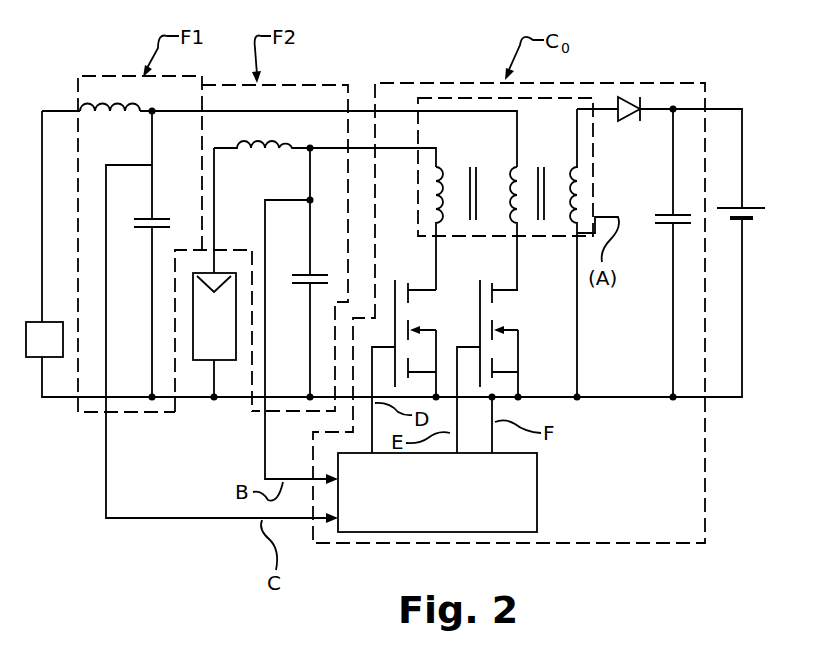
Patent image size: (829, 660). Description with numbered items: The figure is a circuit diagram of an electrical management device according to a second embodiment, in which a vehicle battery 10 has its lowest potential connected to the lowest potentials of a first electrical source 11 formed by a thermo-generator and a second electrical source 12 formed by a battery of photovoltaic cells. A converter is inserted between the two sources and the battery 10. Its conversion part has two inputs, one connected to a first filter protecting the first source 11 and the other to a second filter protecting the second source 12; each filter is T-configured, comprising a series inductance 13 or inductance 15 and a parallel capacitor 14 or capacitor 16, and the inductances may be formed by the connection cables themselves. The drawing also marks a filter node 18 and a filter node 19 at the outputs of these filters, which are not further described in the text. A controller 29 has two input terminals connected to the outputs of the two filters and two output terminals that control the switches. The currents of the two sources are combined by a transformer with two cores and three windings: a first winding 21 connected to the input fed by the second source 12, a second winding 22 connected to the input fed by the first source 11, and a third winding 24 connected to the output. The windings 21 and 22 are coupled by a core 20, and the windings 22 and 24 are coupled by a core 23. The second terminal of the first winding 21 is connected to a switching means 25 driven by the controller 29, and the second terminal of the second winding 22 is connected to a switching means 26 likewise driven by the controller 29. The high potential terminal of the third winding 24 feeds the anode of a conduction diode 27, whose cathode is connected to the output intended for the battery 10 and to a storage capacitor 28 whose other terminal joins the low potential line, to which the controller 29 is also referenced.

The vehicle battery 10 is at (752, 207).
The first electrical source 11 is at (35, 322).
The second electrical source 12 is at (222, 352).
The inductance 13 is at (103, 97).
The capacitor 14 is at (162, 217).
The inductance 15 is at (285, 130).
The capacitor 16 is at (318, 272).
The node 18 is at (148, 160).
The node 19 is at (308, 197).
The core 20 is at (490, 185).
The first winding 21 is at (440, 160).
The second winding 22 is at (507, 226).
The core 23 is at (527, 195).
The third winding 24 is at (567, 160).
The switching means 25 is at (430, 302).
The switching means 26 is at (548, 356).
The conduction diode 27 is at (628, 98).
The storage capacitor 28 is at (668, 213).
The controller 29 is at (527, 488).